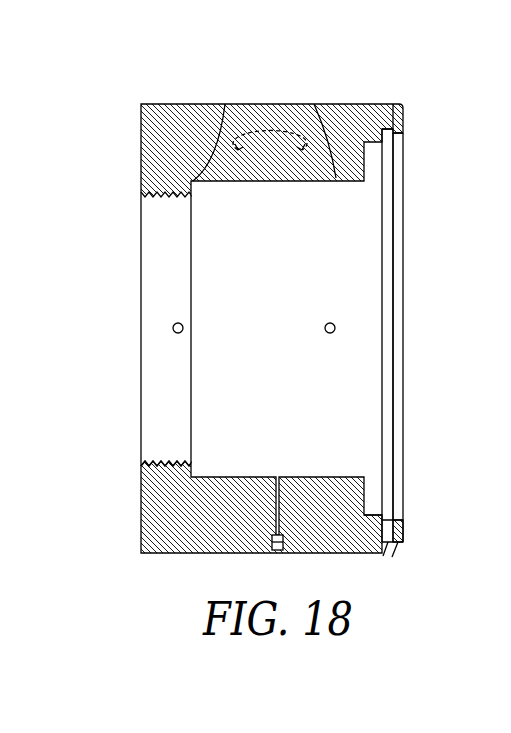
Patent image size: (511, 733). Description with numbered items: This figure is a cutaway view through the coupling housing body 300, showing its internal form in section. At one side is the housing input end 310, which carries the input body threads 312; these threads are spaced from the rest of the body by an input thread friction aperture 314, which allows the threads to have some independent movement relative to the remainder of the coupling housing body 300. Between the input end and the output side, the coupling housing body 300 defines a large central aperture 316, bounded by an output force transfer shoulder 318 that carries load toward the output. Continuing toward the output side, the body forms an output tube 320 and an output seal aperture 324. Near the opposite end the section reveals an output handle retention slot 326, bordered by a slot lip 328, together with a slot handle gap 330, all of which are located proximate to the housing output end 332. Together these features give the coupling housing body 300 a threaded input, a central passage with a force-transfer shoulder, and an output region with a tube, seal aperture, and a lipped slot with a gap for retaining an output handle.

The coupling housing body 300 is at (150, 104).
The housing input end 310 is at (141, 492).
The input body threads 312 is at (144, 461).
The input thread friction aperture 314 is at (141, 224).
The central aperture 316 is at (314, 104).
The output force transfer shoulder 318 is at (225, 104).
The output tube 320 is at (380, 517).
The output seal aperture 324 is at (385, 129).
The output handle retention slot 326 is at (397, 131).
The slot lip 328 is at (404, 118).
The slot handle gap 330 is at (392, 548).
The housing output end 332 is at (404, 140).